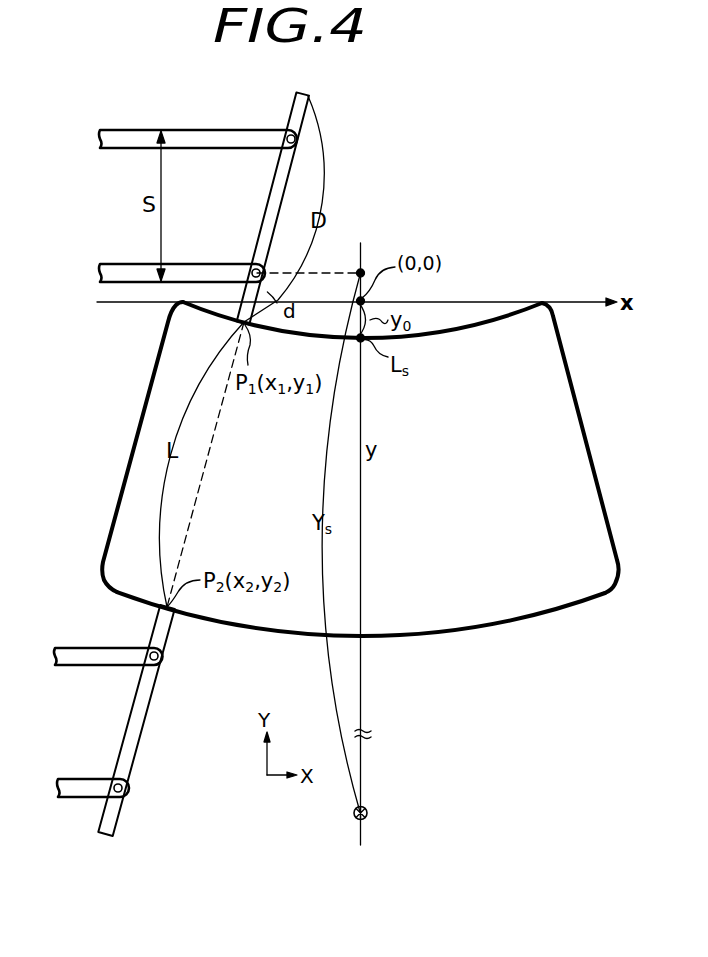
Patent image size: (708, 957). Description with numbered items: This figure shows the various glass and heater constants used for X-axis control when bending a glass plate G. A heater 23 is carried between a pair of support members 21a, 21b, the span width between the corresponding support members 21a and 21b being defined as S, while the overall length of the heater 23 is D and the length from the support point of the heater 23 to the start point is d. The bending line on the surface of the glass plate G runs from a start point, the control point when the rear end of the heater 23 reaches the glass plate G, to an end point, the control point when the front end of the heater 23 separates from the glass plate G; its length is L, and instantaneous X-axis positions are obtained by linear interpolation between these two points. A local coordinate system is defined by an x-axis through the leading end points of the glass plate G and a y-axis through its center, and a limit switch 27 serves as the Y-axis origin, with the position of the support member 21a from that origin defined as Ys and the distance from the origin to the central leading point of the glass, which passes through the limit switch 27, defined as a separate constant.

The support member 21a is at (118, 270).
The support member 21b is at (213, 132).
The heater 23 is at (266, 205).
The limit switch 27 is at (367, 810).
The glass plate G is at (577, 440).